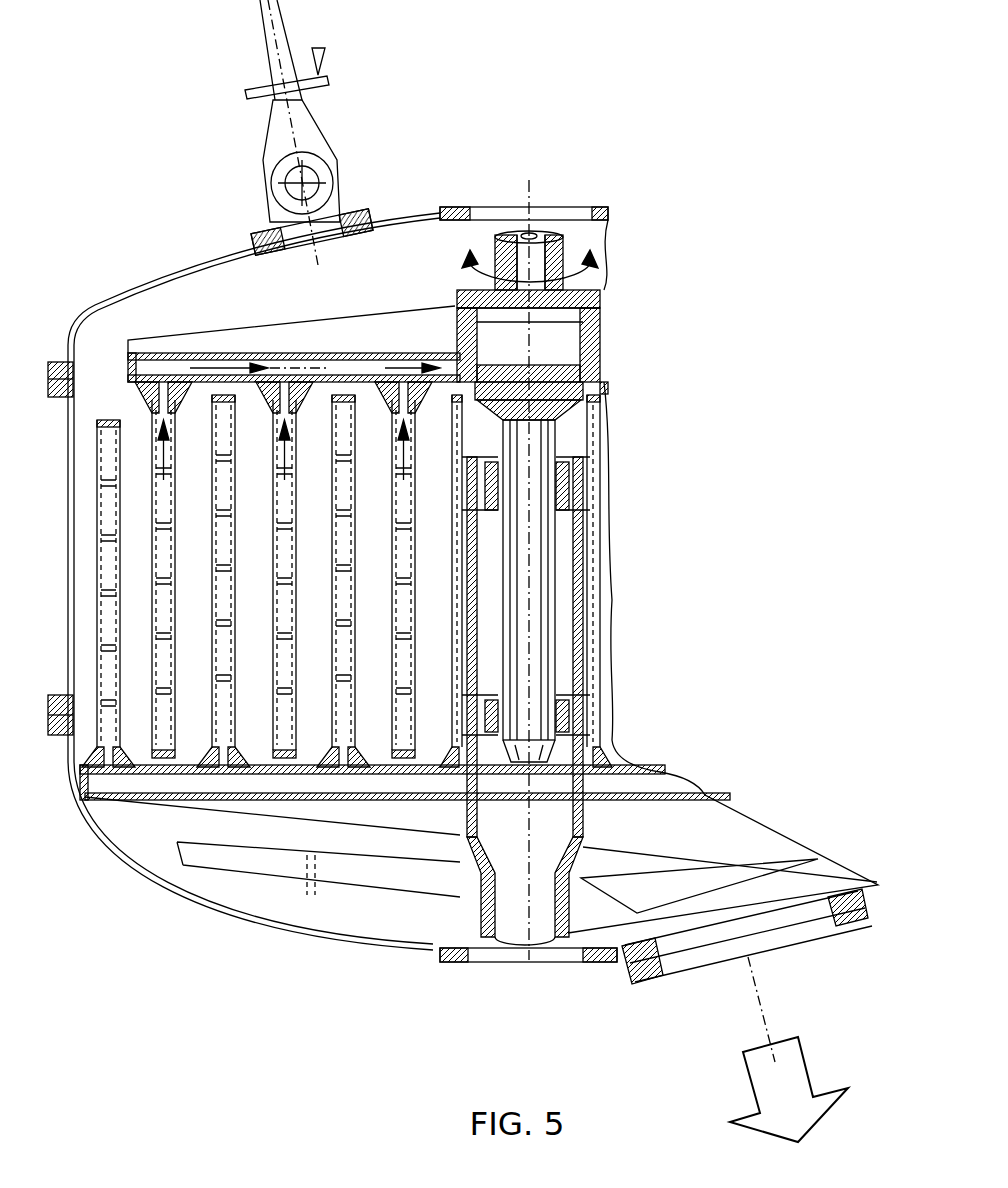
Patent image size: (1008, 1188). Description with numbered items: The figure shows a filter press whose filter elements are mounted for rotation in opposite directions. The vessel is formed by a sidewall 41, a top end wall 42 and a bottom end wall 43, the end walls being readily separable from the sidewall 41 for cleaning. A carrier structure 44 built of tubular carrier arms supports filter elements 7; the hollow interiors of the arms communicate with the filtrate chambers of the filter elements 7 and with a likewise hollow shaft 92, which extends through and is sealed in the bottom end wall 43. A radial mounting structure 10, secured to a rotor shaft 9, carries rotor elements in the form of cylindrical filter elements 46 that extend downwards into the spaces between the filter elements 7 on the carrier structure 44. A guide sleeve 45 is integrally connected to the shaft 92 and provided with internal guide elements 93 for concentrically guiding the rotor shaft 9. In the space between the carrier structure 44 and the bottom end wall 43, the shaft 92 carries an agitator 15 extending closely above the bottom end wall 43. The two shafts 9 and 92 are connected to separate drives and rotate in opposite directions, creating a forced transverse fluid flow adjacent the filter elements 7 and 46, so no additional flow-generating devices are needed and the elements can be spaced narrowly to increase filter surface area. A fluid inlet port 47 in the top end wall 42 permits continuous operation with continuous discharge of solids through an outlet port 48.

The filter elements 7 is at (347, 590).
The rotor shaft 9 is at (540, 588).
The radial mounting structure 10 is at (407, 330).
The agitator 15 is at (607, 903).
The sidewall 41 is at (85, 340).
The top end wall 42 is at (165, 282).
The bottom end wall 43 is at (220, 912).
The carrier structure 44 is at (170, 800).
The guide sleeve 45 is at (470, 665).
The cylindrical filter elements 46 is at (395, 415).
The fluid inlet port 47 is at (312, 133).
The outlet port 48 is at (710, 943).
The shaft 92 is at (490, 890).
The guide elements 93 is at (580, 493).